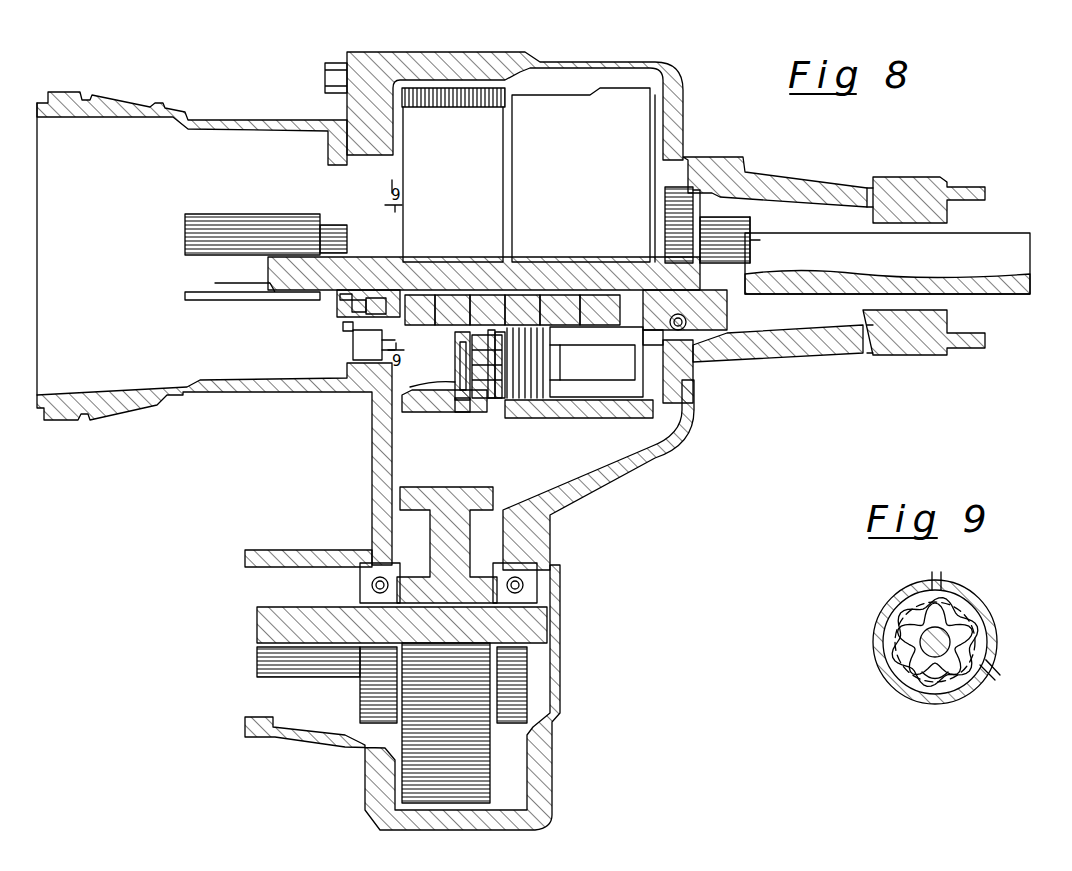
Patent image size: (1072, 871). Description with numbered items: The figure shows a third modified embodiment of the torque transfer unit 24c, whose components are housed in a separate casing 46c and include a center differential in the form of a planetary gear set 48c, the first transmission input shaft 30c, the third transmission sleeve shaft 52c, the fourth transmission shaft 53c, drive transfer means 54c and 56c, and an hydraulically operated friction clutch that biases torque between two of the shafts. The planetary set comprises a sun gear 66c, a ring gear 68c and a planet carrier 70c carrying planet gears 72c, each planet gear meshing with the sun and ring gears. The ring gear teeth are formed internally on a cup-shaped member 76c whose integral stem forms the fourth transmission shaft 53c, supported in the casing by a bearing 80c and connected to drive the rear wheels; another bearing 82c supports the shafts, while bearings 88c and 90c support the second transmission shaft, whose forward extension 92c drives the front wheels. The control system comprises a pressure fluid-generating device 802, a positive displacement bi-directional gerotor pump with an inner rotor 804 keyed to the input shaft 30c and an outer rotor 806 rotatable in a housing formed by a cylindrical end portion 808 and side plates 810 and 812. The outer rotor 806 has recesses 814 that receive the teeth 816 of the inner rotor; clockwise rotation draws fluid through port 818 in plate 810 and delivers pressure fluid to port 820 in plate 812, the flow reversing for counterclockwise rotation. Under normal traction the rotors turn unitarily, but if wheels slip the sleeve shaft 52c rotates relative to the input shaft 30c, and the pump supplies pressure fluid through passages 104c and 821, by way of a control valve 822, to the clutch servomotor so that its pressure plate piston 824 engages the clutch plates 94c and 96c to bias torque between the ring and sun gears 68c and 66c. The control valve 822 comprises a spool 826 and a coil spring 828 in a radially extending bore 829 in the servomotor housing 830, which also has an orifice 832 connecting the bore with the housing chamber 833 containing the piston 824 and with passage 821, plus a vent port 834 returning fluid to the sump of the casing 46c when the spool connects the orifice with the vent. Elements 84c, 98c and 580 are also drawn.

In FIG. 8, the casing 46c is at (458, 52).
In FIG. 8, the unit 24c is at (692, 110).
In FIG. 8, the drive transfer means 54c is at (475, 152).
In FIG. 8, the cup-shaped member 76c is at (601, 152).
In FIG. 8, the fourth transmission shaft 53c is at (873, 257).
In FIG. 8, the first transmission input shaft 30c is at (270, 262).
In FIG. 9, the first transmission input shaft 30c is at (922, 640).
In FIG. 8, the third transmission sleeve shaft 52c is at (640, 268).
In FIG. 8, the bearing 82c is at (660, 275).
In FIG. 8, the side plate 812 is at (412, 288).
In FIG. 8, the passage 104c is at (448, 288).
In FIG. 8, the passage 821 is at (482, 288).
In FIG. 8, the housing chamber 833 is at (520, 288).
In FIG. 8, the clutch plate 96c is at (555, 288).
In FIG. 8, the sun gear 66c is at (592, 288).
In FIG. 8, the inner rotor 804 is at (368, 288).
In FIG. 9, the inner rotor 804 is at (900, 657).
In FIG. 8, the outer rotor 806 is at (366, 312).
In FIG. 9, the outer rotor 806 is at (905, 675).
In FIG. 8, the cylindrical end portion 808 is at (348, 330).
In FIG. 9, the cylindrical end portion 808 is at (893, 605).
In FIG. 8, the side plate 810 is at (340, 298).
In FIG. 8, the pressure fluid-generating device 802 is at (350, 306).
In FIG. 8, the valve 84c is at (355, 356).
In FIG. 8, the control valve 822 is at (430, 414).
In FIG. 8, the ring gear 68c is at (610, 418).
In FIG. 8, the planet gear 72c is at (578, 398).
In FIG. 8, the clutch disc 98c is at (540, 400).
In FIG. 8, the clutch plate 94c is at (540, 418).
In FIG. 8, the pressure plate piston 824 is at (512, 400).
In FIG. 8, the servomotor housing 830 is at (498, 415).
In FIG. 8, the spring 580 is at (490, 415).
In FIG. 8, the port or orifice 832 is at (476, 410).
In FIG. 8, the coil spring 828 is at (458, 414).
In FIG. 8, the valve spool 826 is at (455, 350).
In FIG. 8, the vent port 834 is at (460, 362).
In FIG. 8, the bore 829 is at (440, 381).
In FIG. 8, the planet carrier 70c is at (690, 372).
In FIG. 8, the bearing 80c is at (655, 338).
In FIG. 8, the center differential gear set 48c is at (588, 440).
In FIG. 8, the drive transfer means 56c is at (458, 552).
In FIG. 8, the bearing 88c is at (392, 572).
In FIG. 8, the bearing 90c is at (540, 575).
In FIG. 8, the forward extension 92c is at (317, 608).
In FIG. 9, the teeth 816 is at (963, 625).
In FIG. 9, the port 820 is at (928, 585).
In FIG. 9, the port 818 is at (990, 672).
In FIG. 9, the recesses 814 is at (925, 690).